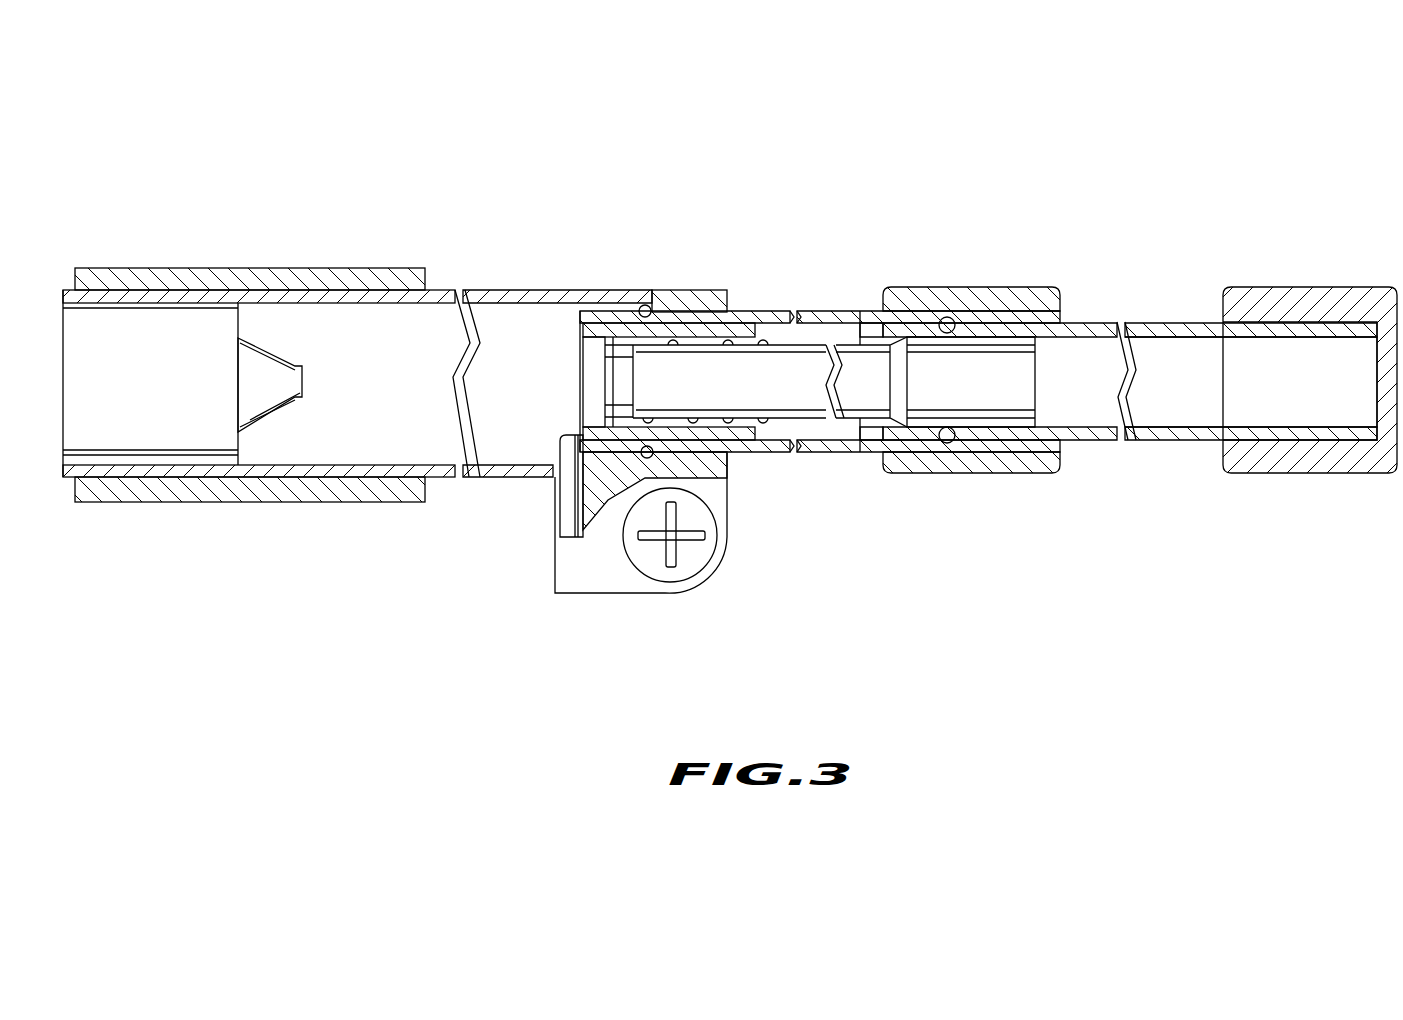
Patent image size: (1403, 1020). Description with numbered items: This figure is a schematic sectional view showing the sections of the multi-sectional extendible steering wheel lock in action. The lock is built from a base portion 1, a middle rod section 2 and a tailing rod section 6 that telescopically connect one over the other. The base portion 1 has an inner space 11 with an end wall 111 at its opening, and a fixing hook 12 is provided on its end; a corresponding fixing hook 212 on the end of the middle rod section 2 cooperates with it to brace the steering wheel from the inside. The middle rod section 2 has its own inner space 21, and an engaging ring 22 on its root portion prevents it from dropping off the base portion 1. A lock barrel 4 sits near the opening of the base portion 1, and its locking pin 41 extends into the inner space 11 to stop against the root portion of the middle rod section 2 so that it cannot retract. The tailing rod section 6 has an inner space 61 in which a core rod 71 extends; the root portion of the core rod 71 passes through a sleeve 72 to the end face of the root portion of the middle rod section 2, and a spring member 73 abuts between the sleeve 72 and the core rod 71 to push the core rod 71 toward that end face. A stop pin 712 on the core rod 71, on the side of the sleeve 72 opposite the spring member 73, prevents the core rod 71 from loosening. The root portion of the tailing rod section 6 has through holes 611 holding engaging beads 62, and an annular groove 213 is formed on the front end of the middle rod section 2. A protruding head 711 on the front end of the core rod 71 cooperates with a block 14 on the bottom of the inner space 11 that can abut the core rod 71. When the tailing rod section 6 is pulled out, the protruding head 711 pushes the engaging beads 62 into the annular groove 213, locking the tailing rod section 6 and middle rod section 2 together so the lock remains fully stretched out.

The base portion 1 is at (443, 297).
The inner space 11 is at (322, 330).
The fixing hook 12 is at (192, 270).
The block 14 is at (303, 393).
The end wall 111 is at (667, 307).
The middle rod section 2 is at (807, 313).
The inner space 21 is at (838, 310).
The fixing hook 212 is at (927, 465).
The annular groove 213 is at (955, 322).
The engaging ring 22 is at (644, 305).
The lock barrel 4 is at (672, 537).
The locking pin 41 is at (565, 490).
The tailing rod section 6 is at (1140, 322).
The inner space 61 is at (1152, 408).
The through holes 611 is at (1000, 288).
The engaging beads 62 is at (945, 322).
The core rod 71 is at (792, 395).
The protruding head 711 is at (977, 397).
The stop pin 712 is at (762, 423).
The sleeve 72 is at (733, 330).
The spring member 73 is at (707, 425).